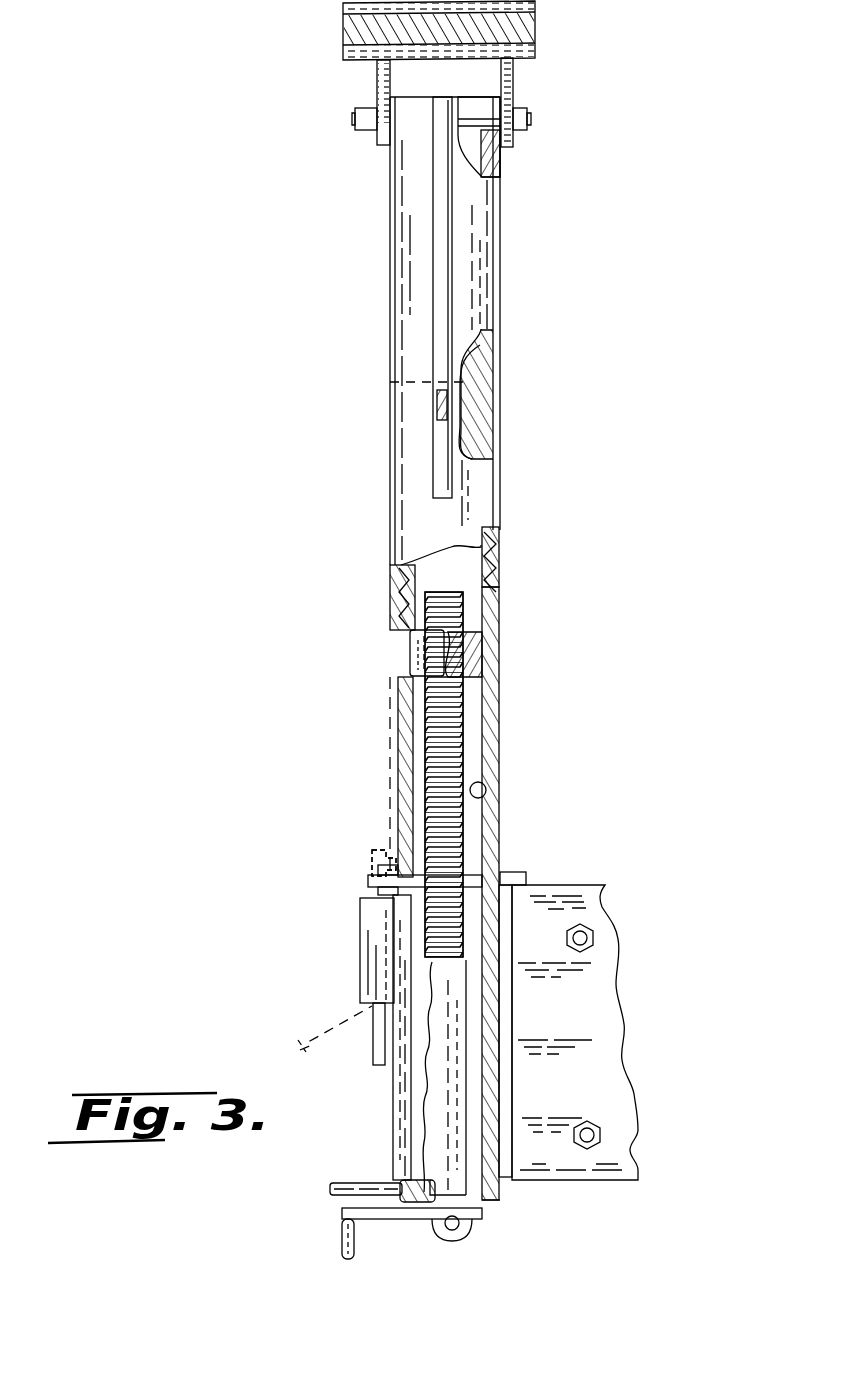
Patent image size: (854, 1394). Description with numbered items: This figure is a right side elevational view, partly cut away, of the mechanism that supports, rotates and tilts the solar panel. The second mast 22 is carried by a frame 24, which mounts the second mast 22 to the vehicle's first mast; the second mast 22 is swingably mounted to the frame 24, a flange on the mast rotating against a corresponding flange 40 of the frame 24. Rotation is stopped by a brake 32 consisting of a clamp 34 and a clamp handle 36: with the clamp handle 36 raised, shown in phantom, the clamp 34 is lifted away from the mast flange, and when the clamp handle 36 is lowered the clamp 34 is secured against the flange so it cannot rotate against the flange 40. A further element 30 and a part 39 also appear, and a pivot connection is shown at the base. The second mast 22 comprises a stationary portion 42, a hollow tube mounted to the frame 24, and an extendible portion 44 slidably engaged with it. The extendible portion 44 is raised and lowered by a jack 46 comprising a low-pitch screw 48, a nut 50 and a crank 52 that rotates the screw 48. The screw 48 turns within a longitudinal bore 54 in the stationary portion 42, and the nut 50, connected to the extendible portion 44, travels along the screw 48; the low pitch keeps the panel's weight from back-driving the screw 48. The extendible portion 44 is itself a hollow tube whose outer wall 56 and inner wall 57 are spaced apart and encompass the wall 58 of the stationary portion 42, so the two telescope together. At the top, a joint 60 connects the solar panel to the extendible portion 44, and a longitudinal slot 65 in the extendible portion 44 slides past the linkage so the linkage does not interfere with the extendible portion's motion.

The second mast 22 is at (248, 276).
The frame 24 is at (578, 885).
The lower tube support pin 30 is at (365, 1185).
The brake 32 is at (377, 847).
The clamp 34 is at (377, 847).
The clamp handle 36 is at (330, 1030).
The plate 39 is at (516, 874).
The flange 40 is at (374, 880).
The stationary portion 42 is at (398, 722).
The extendible portion 44 is at (390, 385).
The jack 46 is at (453, 717).
The low-pitch screw 48 is at (453, 717).
The nut 50 is at (477, 655).
The crank 52 is at (340, 1222).
The longitudinal bore 54 is at (494, 791).
The outer wall 56 is at (499, 558).
The inner wall 57 is at (481, 372).
The wall 58 is at (405, 666).
The joint 60 is at (512, 104).
The longitudinal slot 65 is at (475, 253).